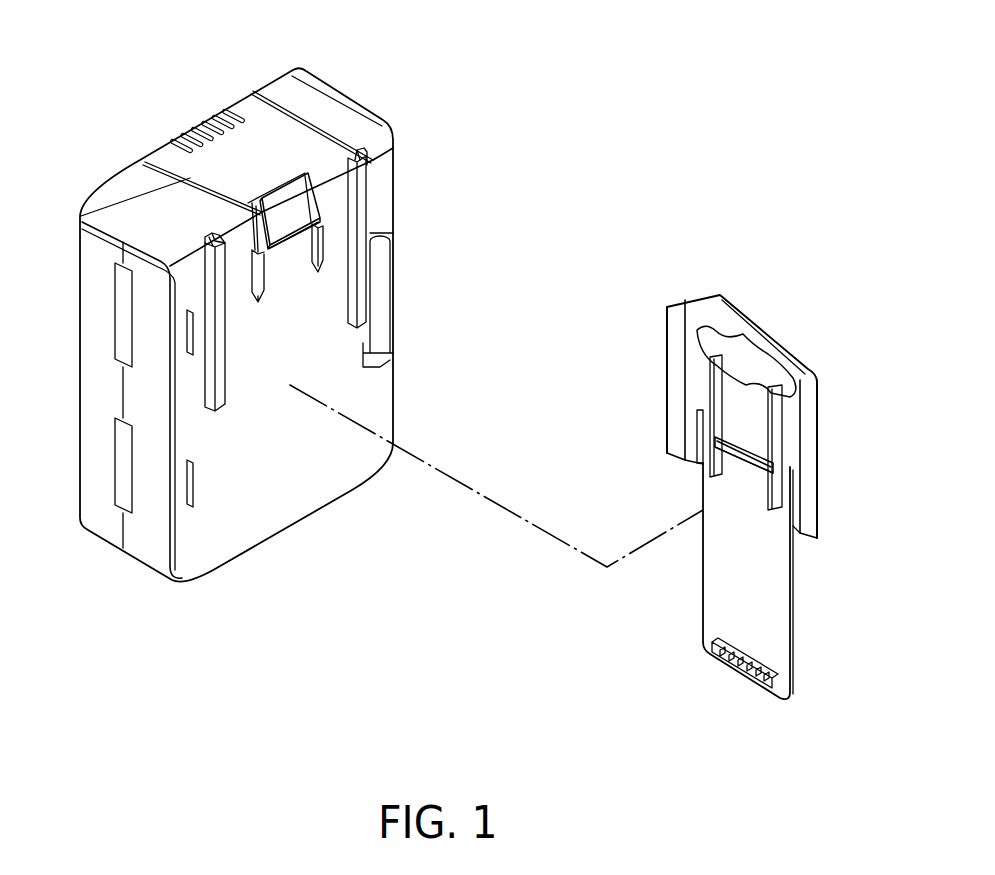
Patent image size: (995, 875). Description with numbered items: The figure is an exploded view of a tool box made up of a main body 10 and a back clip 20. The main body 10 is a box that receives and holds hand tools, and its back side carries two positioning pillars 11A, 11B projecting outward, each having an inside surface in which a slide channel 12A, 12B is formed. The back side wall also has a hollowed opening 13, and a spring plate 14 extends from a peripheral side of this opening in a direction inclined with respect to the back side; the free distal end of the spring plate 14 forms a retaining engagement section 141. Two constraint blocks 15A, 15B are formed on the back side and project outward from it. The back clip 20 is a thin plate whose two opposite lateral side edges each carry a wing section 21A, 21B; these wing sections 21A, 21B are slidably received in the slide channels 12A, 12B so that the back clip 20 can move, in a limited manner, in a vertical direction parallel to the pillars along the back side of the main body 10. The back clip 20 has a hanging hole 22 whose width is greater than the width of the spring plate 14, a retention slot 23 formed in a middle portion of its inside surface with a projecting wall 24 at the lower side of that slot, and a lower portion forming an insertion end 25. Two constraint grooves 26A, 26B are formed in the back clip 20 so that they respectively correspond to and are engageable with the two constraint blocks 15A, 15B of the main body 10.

The main body 10 is at (352, 93).
The positioning pillar 11A is at (216, 383).
The positioning pillar 11B is at (362, 207).
The slide channel 12A is at (216, 240).
The slide channel 12B is at (348, 297).
The hollowed opening 13 is at (300, 185).
The spring plate 14 is at (290, 196).
The retaining engagement section 141 is at (296, 250).
The constraint block 15A is at (252, 276).
The constraint block 15B is at (326, 252).
The back clip 20 is at (761, 303).
The wing section 21A is at (814, 481).
The wing section 21B is at (666, 373).
The hanging hole 22 is at (714, 342).
The retention slot 23 is at (742, 444).
The projecting wall 24 is at (747, 474).
The insertion end 25 is at (733, 589).
The constraint groove 26A is at (770, 431).
The constraint groove 26B is at (713, 400).